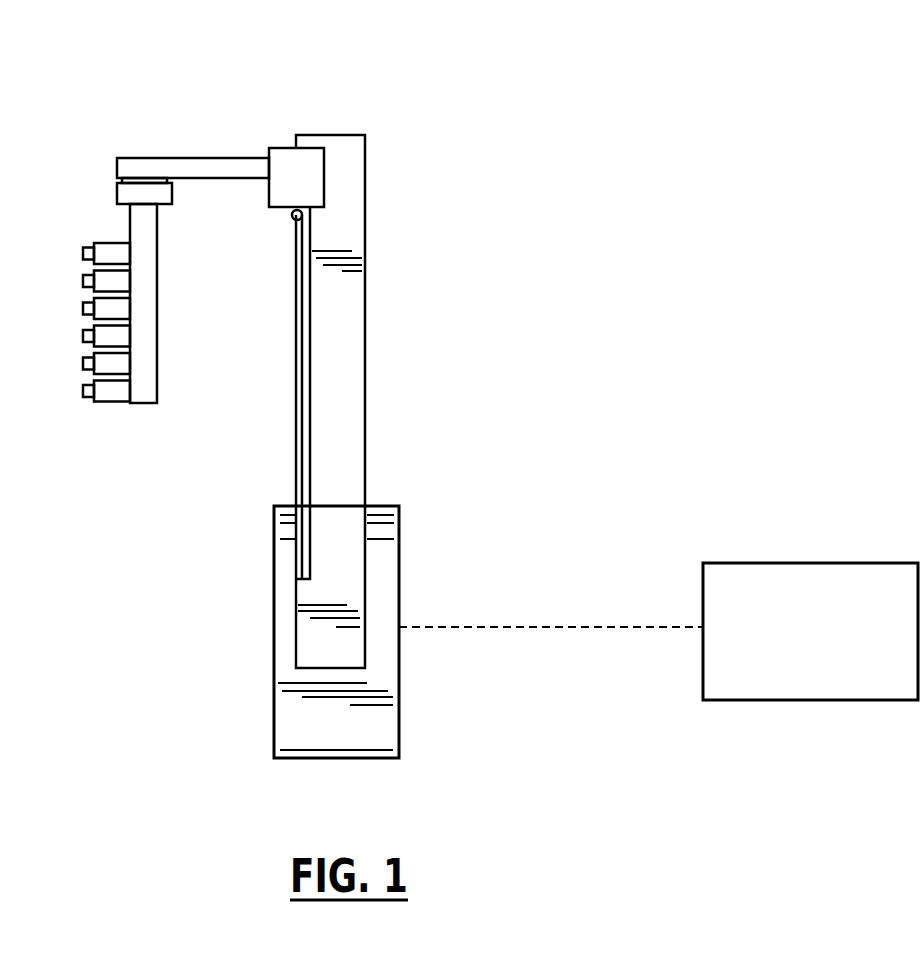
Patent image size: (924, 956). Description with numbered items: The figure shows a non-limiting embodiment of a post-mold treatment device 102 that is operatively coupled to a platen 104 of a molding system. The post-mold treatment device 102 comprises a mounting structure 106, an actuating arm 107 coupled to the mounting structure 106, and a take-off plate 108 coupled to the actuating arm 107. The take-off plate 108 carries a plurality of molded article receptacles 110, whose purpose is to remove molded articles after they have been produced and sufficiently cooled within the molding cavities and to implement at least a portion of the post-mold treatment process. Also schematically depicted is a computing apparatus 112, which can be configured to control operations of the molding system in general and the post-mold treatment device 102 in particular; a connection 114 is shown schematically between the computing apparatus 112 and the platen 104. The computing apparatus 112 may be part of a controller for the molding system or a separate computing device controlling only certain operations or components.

The post-mold treatment device 102 is at (412, 152).
The platen 104 is at (382, 718).
The mounting structure 106 is at (360, 350).
The actuating arm 107 is at (197, 168).
The take-off plate 108 is at (142, 310).
The molded article receptacles 110 is at (103, 250).
The computing apparatus 112 is at (838, 647).
The connection 114 is at (557, 625).